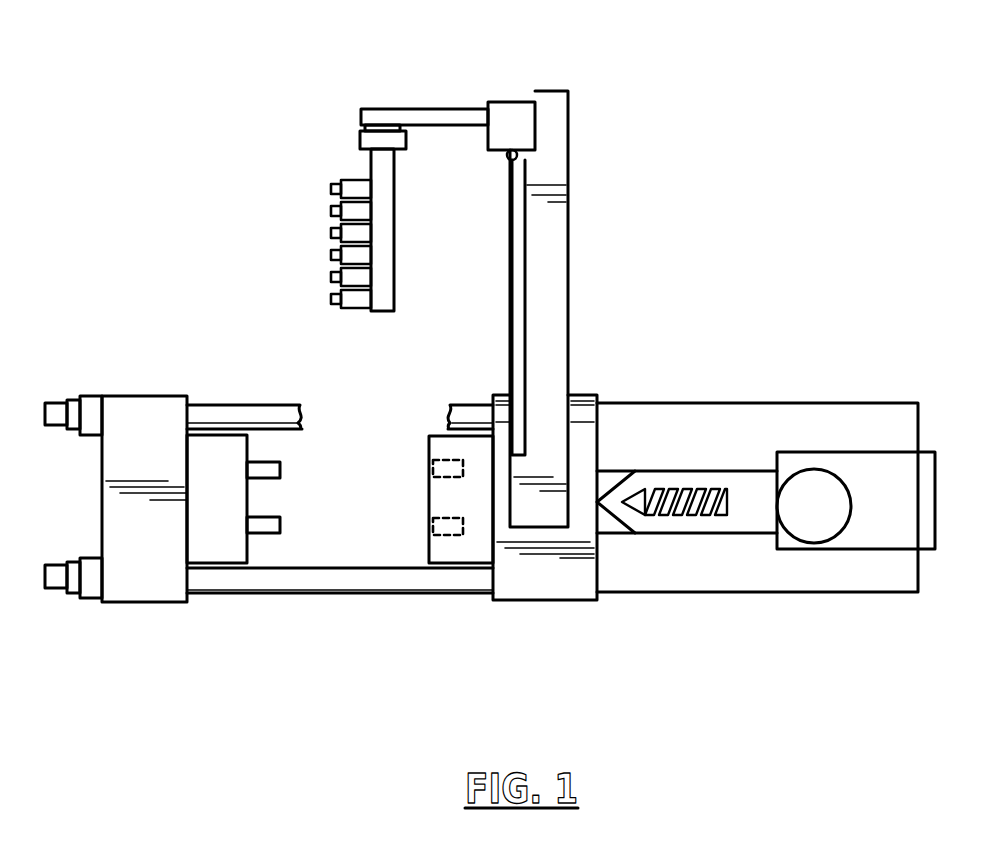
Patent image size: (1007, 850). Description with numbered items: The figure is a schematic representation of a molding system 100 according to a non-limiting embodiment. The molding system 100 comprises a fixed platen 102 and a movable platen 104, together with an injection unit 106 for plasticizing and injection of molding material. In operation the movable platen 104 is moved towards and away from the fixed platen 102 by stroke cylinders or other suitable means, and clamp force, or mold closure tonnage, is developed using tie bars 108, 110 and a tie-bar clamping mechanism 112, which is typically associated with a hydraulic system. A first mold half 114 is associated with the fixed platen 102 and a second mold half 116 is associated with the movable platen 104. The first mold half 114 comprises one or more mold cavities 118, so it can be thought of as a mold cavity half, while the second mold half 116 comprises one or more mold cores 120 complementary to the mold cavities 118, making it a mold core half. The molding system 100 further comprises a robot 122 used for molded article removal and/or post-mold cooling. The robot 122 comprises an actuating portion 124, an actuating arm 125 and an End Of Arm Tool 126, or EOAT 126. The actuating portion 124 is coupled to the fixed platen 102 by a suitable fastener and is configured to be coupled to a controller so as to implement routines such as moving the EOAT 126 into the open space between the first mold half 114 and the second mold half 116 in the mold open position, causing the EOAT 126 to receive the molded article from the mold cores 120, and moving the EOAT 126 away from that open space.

The molding system 100 is at (815, 267).
The fixed platen 102 is at (535, 582).
The movable platen 104 is at (165, 395).
The injection unit 106 is at (717, 583).
The tie bar 108 is at (277, 405).
The tie bar 110 is at (363, 582).
The tie-bar clamping mechanism 112 is at (93, 395).
The first mold half 114 is at (478, 548).
The second mold half 116 is at (212, 545).
The mold cavities 118 is at (429, 500).
The mold cores 120 is at (273, 515).
The robot 122 is at (383, 97).
The actuating portion 124 is at (548, 122).
The actuating arm 125 is at (447, 117).
The End Of Arm Tool 126 is at (385, 237).